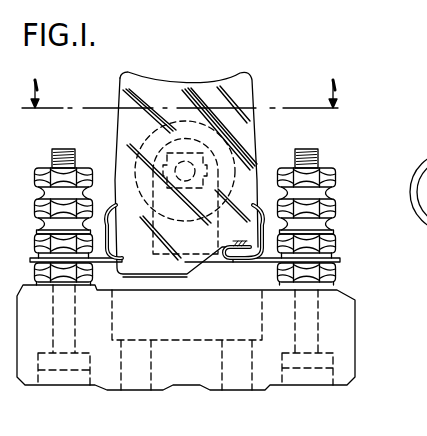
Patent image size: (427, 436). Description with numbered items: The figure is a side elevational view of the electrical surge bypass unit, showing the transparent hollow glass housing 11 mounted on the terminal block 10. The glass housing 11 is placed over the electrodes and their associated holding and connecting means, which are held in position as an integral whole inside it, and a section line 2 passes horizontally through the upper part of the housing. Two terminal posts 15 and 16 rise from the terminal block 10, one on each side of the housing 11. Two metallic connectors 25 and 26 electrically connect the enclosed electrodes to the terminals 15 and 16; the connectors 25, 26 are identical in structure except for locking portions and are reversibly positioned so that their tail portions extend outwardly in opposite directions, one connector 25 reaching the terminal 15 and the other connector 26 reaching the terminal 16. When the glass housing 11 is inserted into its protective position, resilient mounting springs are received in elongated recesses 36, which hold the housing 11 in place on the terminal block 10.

The section line 2- 2 is at (181, 98).
The terminal block 10 is at (353, 333).
The transparent hollow glass housing 11 is at (255, 97).
The terminal 15 is at (62, 148).
The terminal 16 is at (316, 152).
The metallic connector 25 is at (91, 263).
The metallic connector 26 is at (268, 263).
The elongated recesses 36 is at (248, 206).